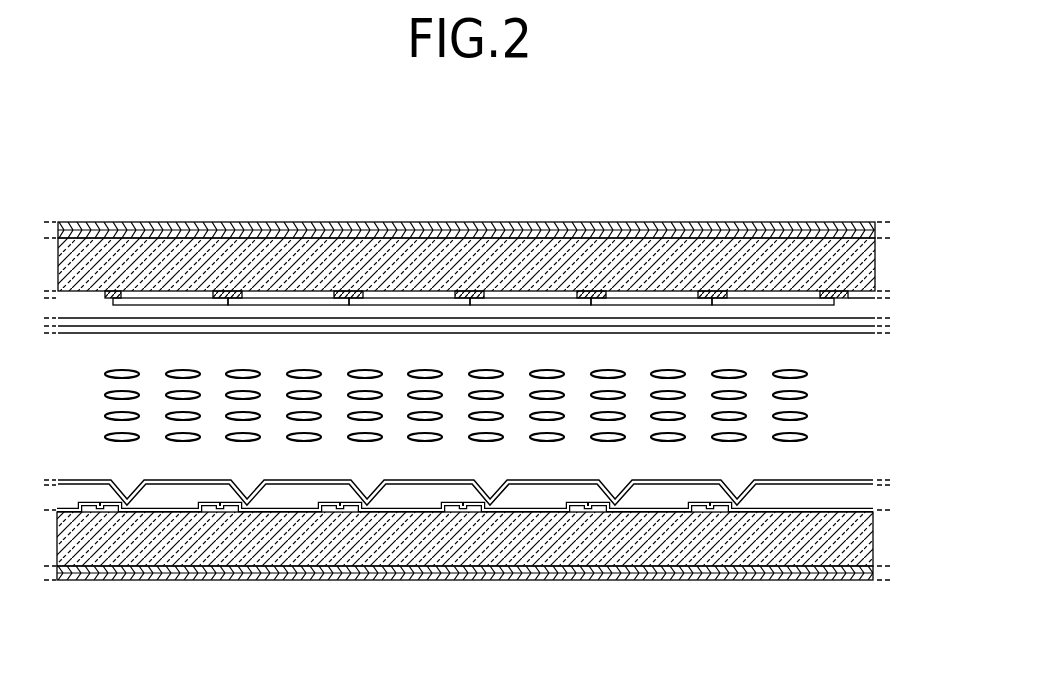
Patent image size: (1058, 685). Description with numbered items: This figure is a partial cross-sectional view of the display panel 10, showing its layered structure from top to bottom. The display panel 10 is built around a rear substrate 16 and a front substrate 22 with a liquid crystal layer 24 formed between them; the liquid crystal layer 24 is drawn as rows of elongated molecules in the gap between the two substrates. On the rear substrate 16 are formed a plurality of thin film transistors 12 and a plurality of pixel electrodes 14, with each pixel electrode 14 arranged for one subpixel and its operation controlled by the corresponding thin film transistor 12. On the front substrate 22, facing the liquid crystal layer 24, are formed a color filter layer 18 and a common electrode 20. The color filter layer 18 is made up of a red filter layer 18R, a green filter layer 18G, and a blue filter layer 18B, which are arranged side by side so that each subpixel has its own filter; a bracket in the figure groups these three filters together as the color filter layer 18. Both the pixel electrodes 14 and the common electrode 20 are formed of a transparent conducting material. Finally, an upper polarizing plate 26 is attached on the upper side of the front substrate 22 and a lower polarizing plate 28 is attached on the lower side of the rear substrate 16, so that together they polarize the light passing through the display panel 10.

The display panel 10 is at (614, 123).
The thin film transistor 12 is at (222, 515).
The pixel electrode 14 is at (410, 483).
The rear substrate 16 is at (120, 552).
The color filter layer 18 is at (467, 214).
The red filter layer 18R is at (292, 296).
The green filter layer 18G is at (406, 300).
The blue filter layer 18B is at (652, 236).
The common electrode 20 is at (768, 325).
The front substrate 22 is at (664, 266).
The liquid crystal layer 24 is at (820, 408).
The upper polarizing plate 26 is at (140, 226).
The lower polarizing plate 28 is at (608, 578).